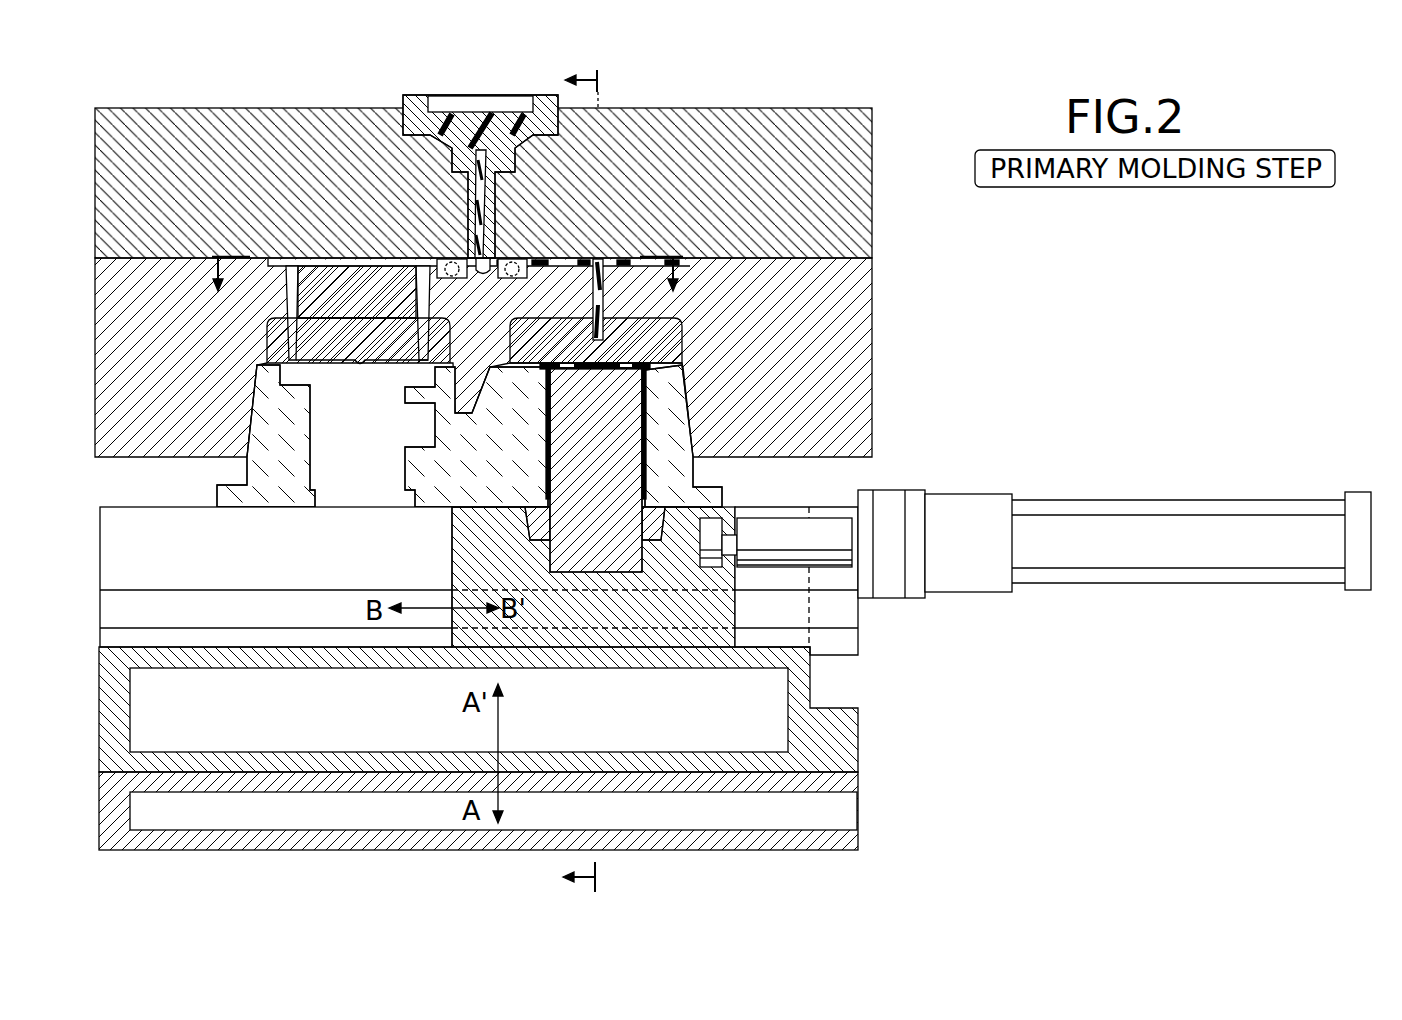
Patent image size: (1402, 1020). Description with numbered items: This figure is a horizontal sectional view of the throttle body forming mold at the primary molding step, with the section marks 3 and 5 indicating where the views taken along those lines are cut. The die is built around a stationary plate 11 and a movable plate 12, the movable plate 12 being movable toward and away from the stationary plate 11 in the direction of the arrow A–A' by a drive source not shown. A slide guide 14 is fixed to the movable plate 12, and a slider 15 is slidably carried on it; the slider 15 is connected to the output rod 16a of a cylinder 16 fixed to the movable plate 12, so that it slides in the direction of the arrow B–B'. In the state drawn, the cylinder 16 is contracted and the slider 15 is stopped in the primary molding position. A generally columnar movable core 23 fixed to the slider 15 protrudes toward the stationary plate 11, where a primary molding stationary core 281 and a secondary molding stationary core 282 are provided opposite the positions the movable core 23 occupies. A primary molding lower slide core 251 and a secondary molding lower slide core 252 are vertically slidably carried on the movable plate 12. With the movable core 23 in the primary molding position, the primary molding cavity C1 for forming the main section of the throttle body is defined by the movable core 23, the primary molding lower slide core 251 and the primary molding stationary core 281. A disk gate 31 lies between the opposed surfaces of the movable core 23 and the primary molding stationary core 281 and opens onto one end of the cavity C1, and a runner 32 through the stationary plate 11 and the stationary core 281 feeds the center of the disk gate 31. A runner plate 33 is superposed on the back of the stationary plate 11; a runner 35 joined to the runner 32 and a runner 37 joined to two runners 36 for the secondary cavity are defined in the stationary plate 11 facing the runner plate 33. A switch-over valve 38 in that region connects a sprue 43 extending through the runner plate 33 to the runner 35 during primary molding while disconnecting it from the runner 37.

The stationary plate 11 is at (860, 418).
The movable plate 12 is at (835, 752).
The slide guide 14 is at (127, 517).
The slider 15 is at (470, 557).
The cylinder 16 is at (1140, 490).
The output rod 16a is at (767, 525).
The movable core 23 is at (586, 448).
The primary molding lower slide core 251 is at (677, 452).
The secondary molding lower slide core 252 is at (284, 452).
The primary molding stationary core 281 is at (636, 353).
The secondary molding stationary core 282 is at (398, 353).
The disk gate 31 is at (568, 362).
The runner 32 is at (605, 300).
The runner plate 33 is at (862, 238).
The runner 35 is at (550, 262).
The runner 36 is at (298, 292).
The runner 37 is at (333, 264).
The switch-over valve 38 is at (483, 284).
The sprue 43 is at (478, 237).
The primary molding cavity C1 is at (548, 388).
The subsidiary section 3 is at (563, 479).
The section line 5 is at (447, 282).